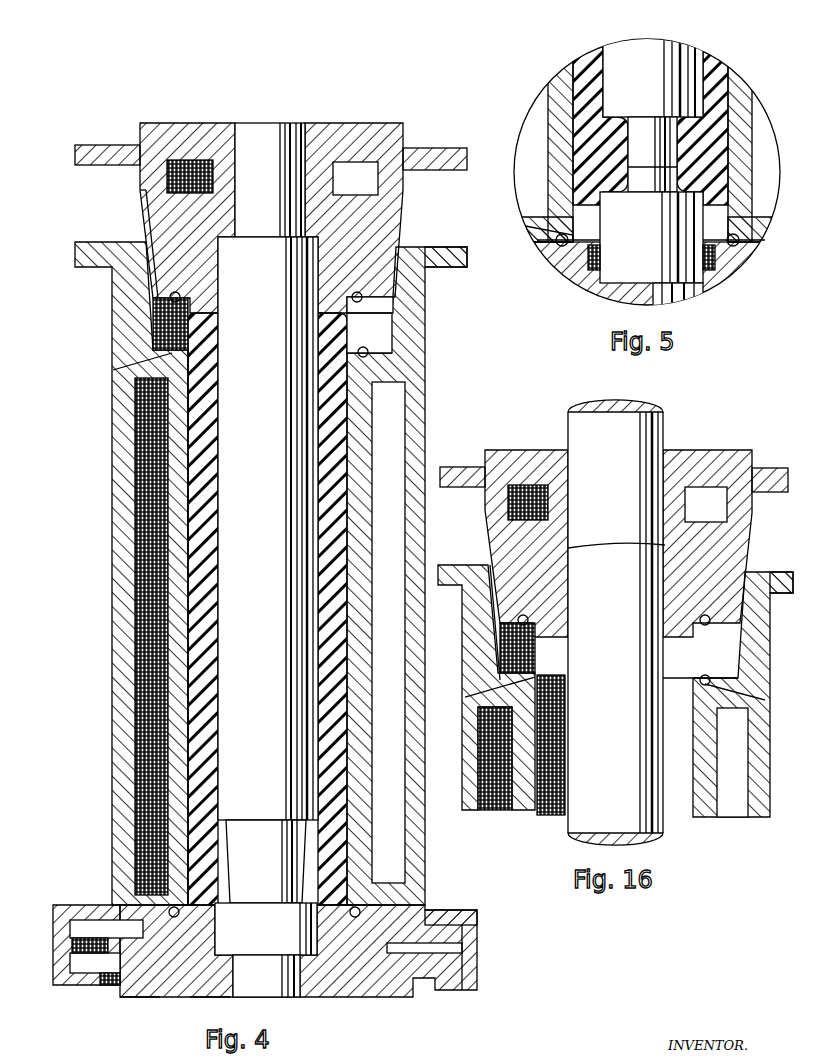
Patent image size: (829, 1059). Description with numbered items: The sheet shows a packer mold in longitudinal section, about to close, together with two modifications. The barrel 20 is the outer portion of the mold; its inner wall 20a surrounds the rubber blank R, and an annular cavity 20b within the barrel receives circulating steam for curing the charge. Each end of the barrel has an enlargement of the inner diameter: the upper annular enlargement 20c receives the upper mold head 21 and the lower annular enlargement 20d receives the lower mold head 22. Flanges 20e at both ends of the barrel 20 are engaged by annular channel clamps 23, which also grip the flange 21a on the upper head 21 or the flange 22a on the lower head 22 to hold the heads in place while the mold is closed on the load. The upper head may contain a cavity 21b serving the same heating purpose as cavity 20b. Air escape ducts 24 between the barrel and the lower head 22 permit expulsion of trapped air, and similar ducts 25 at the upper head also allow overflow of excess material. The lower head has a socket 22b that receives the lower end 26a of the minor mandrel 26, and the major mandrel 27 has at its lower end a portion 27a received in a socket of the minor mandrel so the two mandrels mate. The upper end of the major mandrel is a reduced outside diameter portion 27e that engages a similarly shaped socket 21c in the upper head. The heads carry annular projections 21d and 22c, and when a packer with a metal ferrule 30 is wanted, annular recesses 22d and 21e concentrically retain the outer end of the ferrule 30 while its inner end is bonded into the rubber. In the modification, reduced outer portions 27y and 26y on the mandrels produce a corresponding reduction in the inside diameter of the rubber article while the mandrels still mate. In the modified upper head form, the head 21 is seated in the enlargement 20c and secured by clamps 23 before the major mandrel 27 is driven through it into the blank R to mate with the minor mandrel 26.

In FIG. 4, the barrel 20 is at (118, 343).
In FIG. 5, the barrel 20 is at (740, 96).
In FIG. 16, the barrel 20 is at (615, 691).
In FIG. 4, the inner wall 20a is at (186, 430).
In FIG. 4, the annular cavity 20b is at (162, 463).
In FIG. 16, the annular cavity 20b is at (480, 830).
In FIG. 4, the upper annular enlargement 20c is at (378, 335).
In FIG. 16, the upper annular enlargement 20c is at (742, 664).
In FIG. 4, the lower annular enlargement 20d is at (96, 930).
In FIG. 4, the flange 20e is at (450, 247).
In FIG. 16, the flange 20e is at (788, 572).
In FIG. 4, the upper mold head 21 is at (145, 123).
In FIG. 16, the upper mold head 21 is at (745, 452).
In FIG. 4, the flange 21a is at (84, 145).
In FIG. 16, the flange 21a is at (790, 468).
In FIG. 4, the cavity 21b is at (352, 178).
In FIG. 16, the cavity 21b is at (540, 500).
In FIG. 4, the socket 21c is at (208, 140).
In FIG. 4, the annular projection 21d is at (365, 308).
In FIG. 16, the annular recess 21e is at (615, 545).
In FIG. 4, the lower mold head 22 is at (352, 985).
In FIG. 5, the lower mold head 22 is at (706, 268).
In FIG. 4, the flange 22a is at (452, 958).
In FIG. 4, the socket 22b is at (210, 997).
In FIG. 4, the annular projection 22c is at (145, 997).
In FIG. 5, the annular recess 22d is at (570, 268).
In FIG. 4, the annular channel clamp 23 is at (53, 925).
In FIG. 4, the air escape duct 24 is at (168, 907).
In FIG. 5, the air escape duct 24 is at (742, 242).
In FIG. 4, the duct 25 is at (362, 300).
In FIG. 16, the duct 25 is at (706, 676).
In FIG. 4, the minor mandrel 26 is at (262, 927).
In FIG. 5, the minor mandrel 26 is at (612, 280).
In FIG. 4, the lower end 26a is at (262, 984).
In FIG. 5, the reduced outer portion 26y is at (645, 190).
In FIG. 4, the major mandrel 27 is at (272, 281).
In FIG. 5, the major mandrel 27 is at (660, 58).
In FIG. 16, the major mandrel 27 is at (658, 437).
In FIG. 4, the lower end portion 27a is at (268, 851).
In FIG. 4, the reduced outside diameter portion 27e is at (270, 110).
In FIG. 5, the reduced outer portion 27y is at (648, 125).
In FIG. 5, the metal ferrule 30 is at (553, 255).
In FIG. 4, the blank R is at (196, 505).
In FIG. 5, the blank R is at (730, 97).
In FIG. 16, the blank R is at (551, 745).